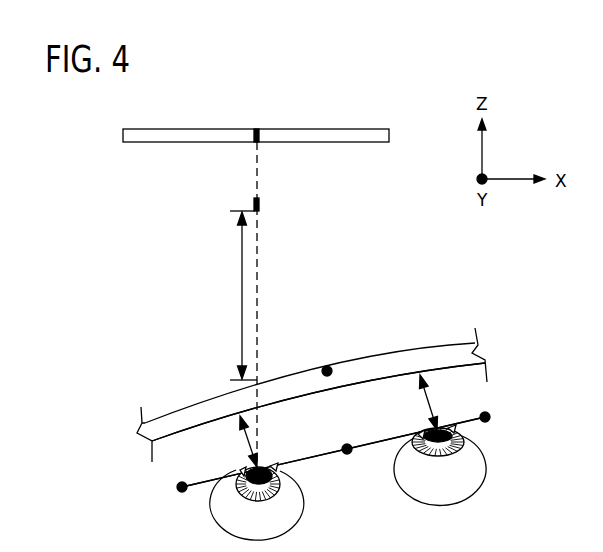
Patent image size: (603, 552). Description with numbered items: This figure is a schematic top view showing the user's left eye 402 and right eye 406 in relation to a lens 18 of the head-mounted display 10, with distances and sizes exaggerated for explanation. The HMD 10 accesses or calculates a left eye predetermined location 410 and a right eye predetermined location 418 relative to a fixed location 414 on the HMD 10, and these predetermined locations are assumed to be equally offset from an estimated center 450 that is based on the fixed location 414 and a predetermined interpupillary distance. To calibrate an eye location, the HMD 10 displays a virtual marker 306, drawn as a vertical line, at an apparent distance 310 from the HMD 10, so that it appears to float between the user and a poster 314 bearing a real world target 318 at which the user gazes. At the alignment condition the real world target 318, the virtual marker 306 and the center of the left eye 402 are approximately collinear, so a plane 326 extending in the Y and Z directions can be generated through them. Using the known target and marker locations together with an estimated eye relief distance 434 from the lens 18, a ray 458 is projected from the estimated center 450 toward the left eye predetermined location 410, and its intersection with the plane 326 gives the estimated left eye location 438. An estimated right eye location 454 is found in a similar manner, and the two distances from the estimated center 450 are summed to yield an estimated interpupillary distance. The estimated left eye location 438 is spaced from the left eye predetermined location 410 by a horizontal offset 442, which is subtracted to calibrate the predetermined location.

The head-mounted display 10 is at (196, 400).
The lens 18 is at (175, 437).
The virtual marker 306 is at (261, 207).
The apparent distance 310 is at (242, 305).
The poster 314 is at (316, 128).
The real world target 318 is at (255, 128).
The plane 326 is at (257, 290).
The left eye 402 is at (288, 528).
The right eye 406 is at (465, 490).
The left eye predetermined location 410 is at (178, 488).
The fixed location 414 is at (328, 366).
The right eye predetermined location 418 is at (489, 418).
The estimated eye relief distance 434 is at (250, 446).
The estimated left eye location 438 is at (260, 466).
The horizontal offset 442 is at (210, 481).
The estimated center 450 is at (347, 445).
The estimated right eye location 454 is at (432, 428).
The ray 458 is at (347, 455).